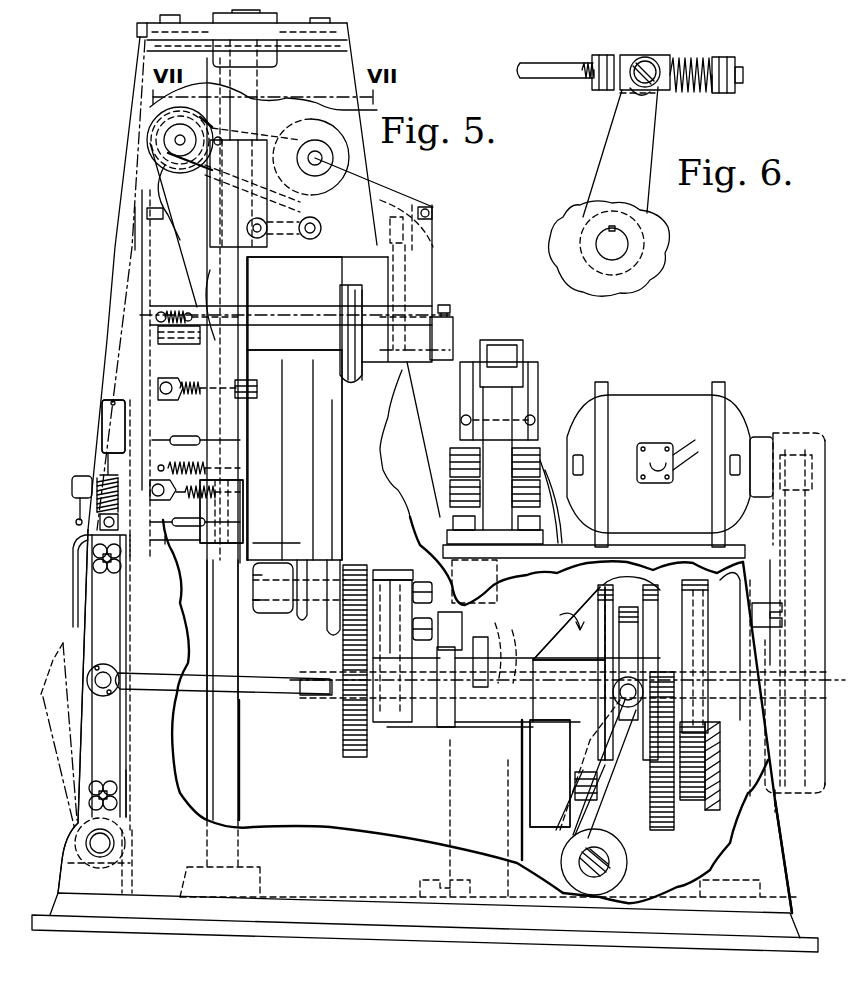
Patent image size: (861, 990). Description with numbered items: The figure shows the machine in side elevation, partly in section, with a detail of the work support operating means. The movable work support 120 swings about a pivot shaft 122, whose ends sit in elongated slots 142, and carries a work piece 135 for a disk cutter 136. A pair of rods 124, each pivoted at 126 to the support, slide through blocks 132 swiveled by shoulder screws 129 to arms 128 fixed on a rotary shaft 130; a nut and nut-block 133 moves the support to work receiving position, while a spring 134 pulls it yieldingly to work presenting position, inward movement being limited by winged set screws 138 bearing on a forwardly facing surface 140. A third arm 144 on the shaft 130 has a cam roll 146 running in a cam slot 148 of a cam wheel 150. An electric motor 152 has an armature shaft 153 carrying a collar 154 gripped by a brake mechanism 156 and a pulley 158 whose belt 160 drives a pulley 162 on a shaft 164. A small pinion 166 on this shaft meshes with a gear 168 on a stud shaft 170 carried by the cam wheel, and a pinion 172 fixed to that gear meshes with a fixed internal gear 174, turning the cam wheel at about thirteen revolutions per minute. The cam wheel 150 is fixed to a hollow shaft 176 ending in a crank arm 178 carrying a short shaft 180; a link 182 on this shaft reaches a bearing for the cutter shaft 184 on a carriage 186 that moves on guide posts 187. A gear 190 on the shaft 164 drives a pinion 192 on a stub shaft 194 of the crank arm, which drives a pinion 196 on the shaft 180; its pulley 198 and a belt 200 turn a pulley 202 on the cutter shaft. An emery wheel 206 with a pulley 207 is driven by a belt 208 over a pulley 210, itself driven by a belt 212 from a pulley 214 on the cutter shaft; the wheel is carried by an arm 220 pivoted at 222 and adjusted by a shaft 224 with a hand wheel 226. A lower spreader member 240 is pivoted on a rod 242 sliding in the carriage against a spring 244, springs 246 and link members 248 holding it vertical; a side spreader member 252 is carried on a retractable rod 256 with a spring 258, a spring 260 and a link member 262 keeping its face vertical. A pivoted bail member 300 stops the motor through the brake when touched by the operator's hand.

In FIG. 5, the work support 120 is at (97, 637).
In FIG. 5, the pivot shaft 122 is at (106, 840).
In FIG. 5, the rod 124 is at (283, 694).
In FIG. 6, the rod 124 is at (540, 72).
In FIG. 5, the pivot 126 is at (110, 678).
In FIG. 6, the arm 128 is at (612, 150).
In FIG. 6, the shoulder screw 129 is at (642, 93).
In FIG. 5, the rotary shaft 130 is at (600, 858).
In FIG. 6, the rotary shaft 130 is at (602, 250).
In FIG. 6, the block 132 is at (650, 60).
In FIG. 6, the nut and nut-block 133 is at (610, 55).
In FIG. 6, the spring 134 is at (694, 62).
In FIG. 5, the work piece 135 is at (80, 575).
In FIG. 5, the disk cutter 136 is at (158, 173).
In FIG. 5, the winged set screws 138 is at (128, 565).
In FIG. 5, the forwardly facing surface 140 is at (133, 782).
In FIG. 5, the transversely elongated slot 142 is at (114, 845).
In FIG. 5, the third arm 144 is at (585, 818).
In FIG. 5, the cam roll 146 is at (613, 692).
In FIG. 5, the cam slot 148 is at (632, 593).
In FIG. 5, the cam wheel 150 is at (598, 584).
In FIG. 5, the electric motor 152 is at (648, 400).
In FIG. 5, the armature shaft 153 is at (797, 448).
In FIG. 5, the collar 154 is at (487, 492).
In FIG. 5, the brake mechanism 156 is at (452, 432).
In FIG. 5, the pulley 158 is at (780, 475).
In FIG. 5, the belt 160 is at (790, 522).
In FIG. 5, the pulley 162 is at (782, 848).
In FIG. 5, the shaft 164 is at (380, 720).
In FIG. 5, the small pinion 166 is at (665, 672).
In FIG. 5, the gear 168 is at (660, 743).
In FIG. 5, the stud shaft 170 is at (585, 815).
In FIG. 5, the pinion 172 is at (700, 765).
In FIG. 5, the internal gear 174 is at (690, 790).
In FIG. 5, the hollow shaft 176 is at (495, 660).
In FIG. 5, the crank arm 178 is at (405, 612).
In FIG. 5, the short shaft 180 is at (275, 613).
In FIG. 5, the link 182 is at (288, 458).
In FIG. 5, the shaft 184 is at (283, 318).
In FIG. 5, the carriage 186 is at (248, 280).
In FIG. 5, the guide posts 187 is at (248, 107).
In FIG. 5, the gear 190 is at (343, 725).
In FIG. 5, the pinion 192 is at (343, 657).
In FIG. 5, the stub shaft 194 is at (340, 640).
In FIG. 5, the pinion 196 is at (357, 565).
In FIG. 5, the pulley 198 is at (343, 562).
In FIG. 5, the belt 200 is at (343, 450).
In FIG. 5, the pulley 202 is at (340, 395).
In FIG. 5, the emery wheel 206 is at (191, 112).
In FIG. 5, the pulley 207 is at (190, 125).
In FIG. 5, the belt 208 is at (250, 122).
In FIG. 5, the pulley 210 is at (313, 127).
In FIG. 5, the belt 212 is at (355, 275).
In FIG. 5, the pulley 214 is at (362, 374).
In FIG. 5, the arm 220 is at (218, 139).
In FIG. 5, the pivot 222 is at (330, 142).
In FIG. 5, the adjusting shaft 224 is at (390, 197).
In FIG. 5, the hand wheel 226 is at (430, 213).
In FIG. 5, the spreader member 240 is at (148, 484).
In FIG. 5, the rod 242 is at (223, 543).
In FIG. 5, the spring 244 is at (200, 516).
In FIG. 5, the springs 246 is at (162, 466).
In FIG. 5, the link members 248 is at (185, 542).
In FIG. 5, the spreader member 252 is at (135, 362).
In FIG. 5, the retractable rod 256 is at (240, 400).
In FIG. 5, the spring 258 is at (186, 380).
In FIG. 5, the spring 260 is at (168, 310).
In FIG. 5, the link member 262 is at (187, 436).
In FIG. 5, the bail member 300 is at (80, 528).